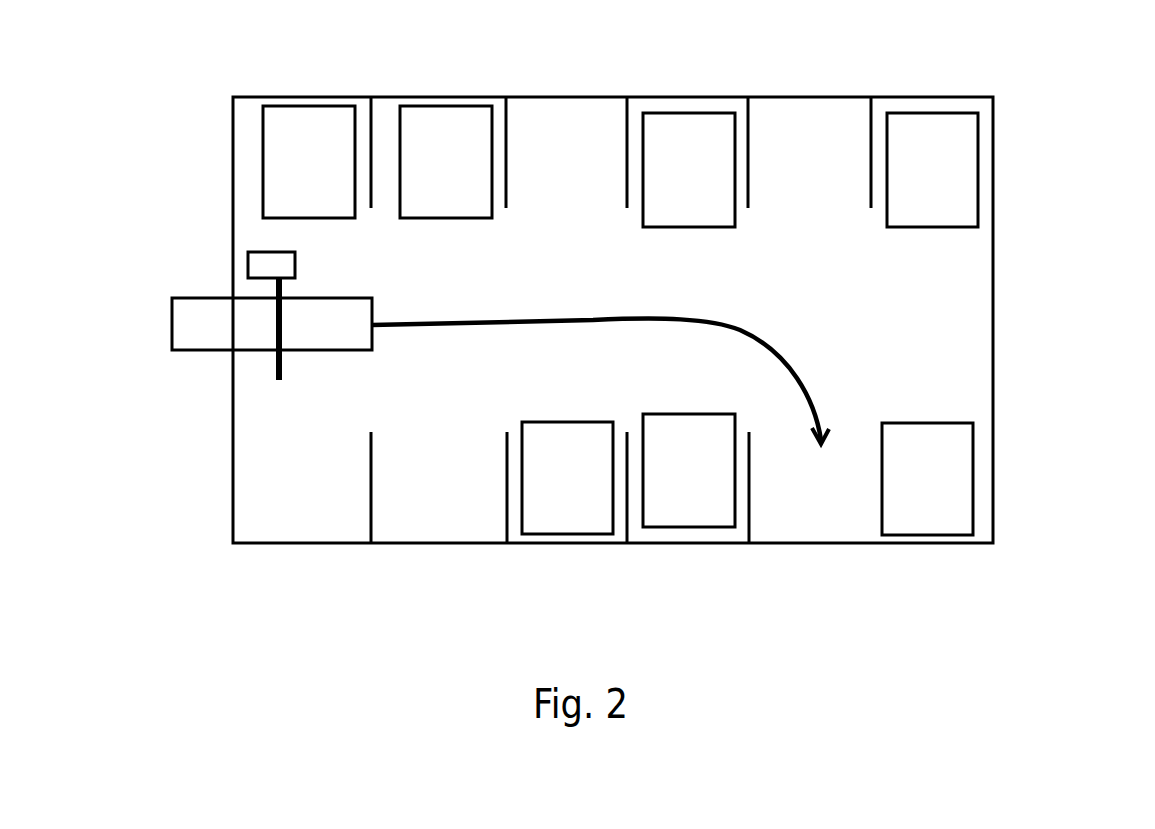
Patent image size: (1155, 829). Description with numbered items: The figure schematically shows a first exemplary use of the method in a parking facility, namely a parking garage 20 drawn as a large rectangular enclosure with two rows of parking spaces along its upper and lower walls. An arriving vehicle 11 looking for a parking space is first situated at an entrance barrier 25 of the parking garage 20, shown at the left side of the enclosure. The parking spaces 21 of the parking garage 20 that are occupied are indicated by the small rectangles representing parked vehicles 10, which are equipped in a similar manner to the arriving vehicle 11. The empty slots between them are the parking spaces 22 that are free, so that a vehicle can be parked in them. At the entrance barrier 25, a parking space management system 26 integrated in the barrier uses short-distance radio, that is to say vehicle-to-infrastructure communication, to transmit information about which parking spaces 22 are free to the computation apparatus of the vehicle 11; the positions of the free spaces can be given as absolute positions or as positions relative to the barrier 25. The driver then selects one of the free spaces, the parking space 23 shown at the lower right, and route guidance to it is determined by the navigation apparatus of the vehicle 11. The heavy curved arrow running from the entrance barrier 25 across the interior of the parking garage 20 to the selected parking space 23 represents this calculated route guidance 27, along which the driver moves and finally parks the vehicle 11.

The vehicle 10 is at (293, 137).
The vehicle 11 is at (268, 261).
The parking garage 20 is at (927, 303).
The parking space 21 is at (250, 187).
The parking space 22 is at (567, 127).
The parking space 23 is at (800, 517).
The entrance barrier 25 is at (278, 358).
The parking space management system 26 is at (195, 327).
The route guidance 27 is at (797, 372).